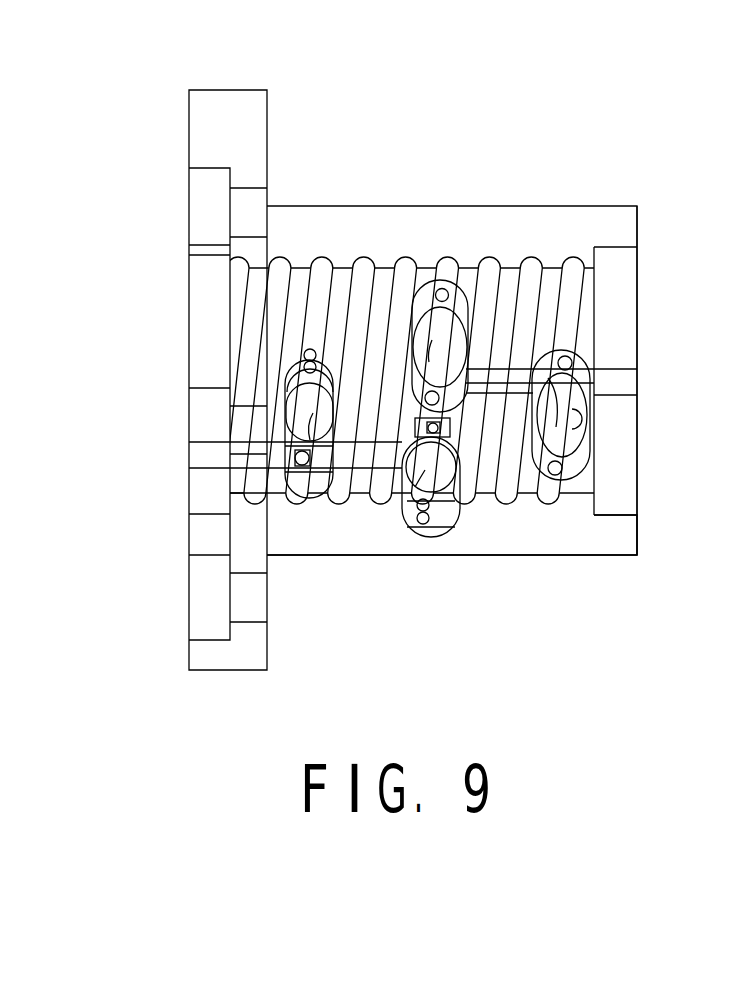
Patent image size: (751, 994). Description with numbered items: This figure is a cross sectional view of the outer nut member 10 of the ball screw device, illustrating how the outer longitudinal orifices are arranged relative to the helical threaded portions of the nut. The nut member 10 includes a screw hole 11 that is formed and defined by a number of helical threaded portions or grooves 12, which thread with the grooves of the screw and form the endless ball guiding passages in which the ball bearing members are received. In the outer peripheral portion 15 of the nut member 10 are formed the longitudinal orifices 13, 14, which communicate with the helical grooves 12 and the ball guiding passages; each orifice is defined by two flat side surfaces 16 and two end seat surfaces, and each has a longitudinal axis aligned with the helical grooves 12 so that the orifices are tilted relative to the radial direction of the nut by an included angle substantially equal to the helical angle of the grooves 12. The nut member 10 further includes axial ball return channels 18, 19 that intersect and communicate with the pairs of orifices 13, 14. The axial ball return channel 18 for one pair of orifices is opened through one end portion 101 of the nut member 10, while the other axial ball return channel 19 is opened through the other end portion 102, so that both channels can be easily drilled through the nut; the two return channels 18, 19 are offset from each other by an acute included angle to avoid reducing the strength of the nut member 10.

The outer nut member 10 is at (381, 193).
The screw hole 11 is at (605, 299).
The helical threaded portions or grooves 12 is at (317, 277).
The longitudinal orifice 13 is at (313, 480).
The longitudinal orifice 14 is at (544, 473).
The outer peripheral portion 15 is at (626, 194).
The flat side surfaces 16 is at (583, 437).
The axial ball return channel 18 is at (627, 383).
The axial ball return channel 19 is at (202, 453).
The end portion 101 is at (651, 540).
The end portion 102 is at (181, 664).